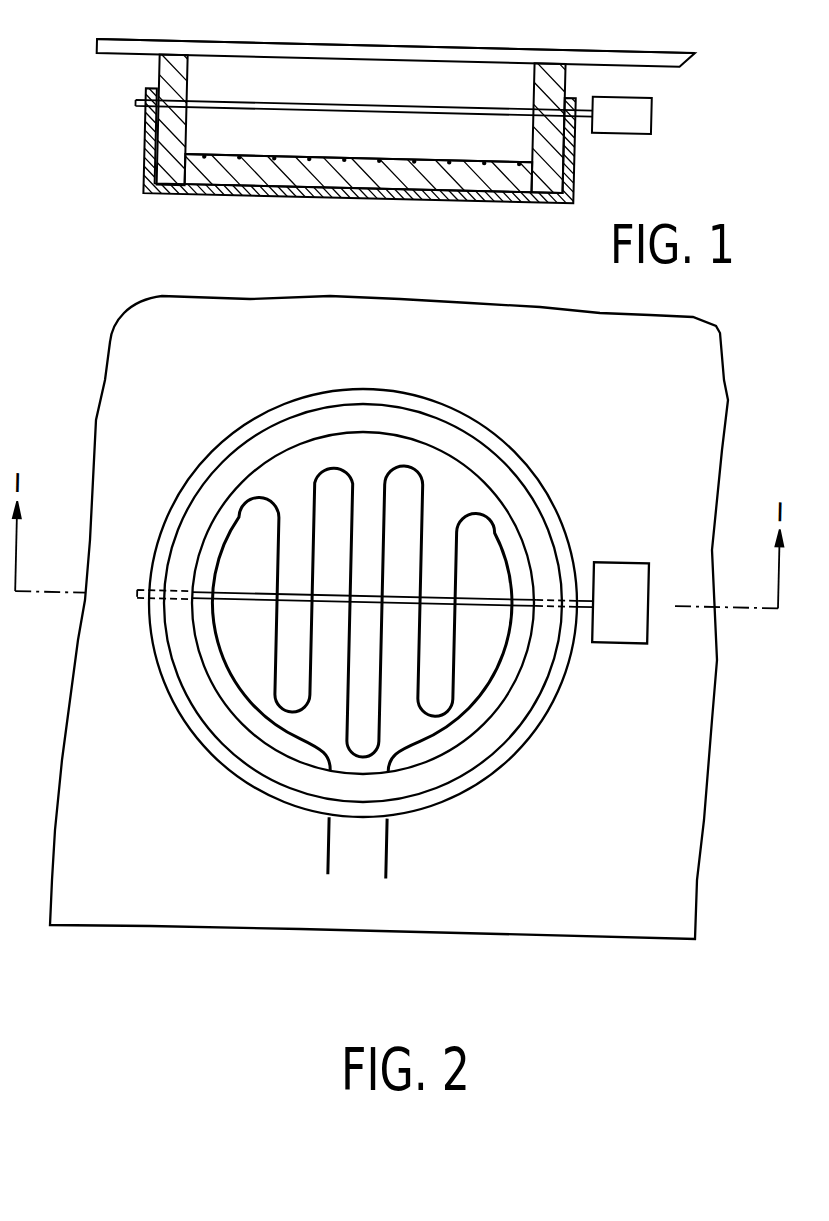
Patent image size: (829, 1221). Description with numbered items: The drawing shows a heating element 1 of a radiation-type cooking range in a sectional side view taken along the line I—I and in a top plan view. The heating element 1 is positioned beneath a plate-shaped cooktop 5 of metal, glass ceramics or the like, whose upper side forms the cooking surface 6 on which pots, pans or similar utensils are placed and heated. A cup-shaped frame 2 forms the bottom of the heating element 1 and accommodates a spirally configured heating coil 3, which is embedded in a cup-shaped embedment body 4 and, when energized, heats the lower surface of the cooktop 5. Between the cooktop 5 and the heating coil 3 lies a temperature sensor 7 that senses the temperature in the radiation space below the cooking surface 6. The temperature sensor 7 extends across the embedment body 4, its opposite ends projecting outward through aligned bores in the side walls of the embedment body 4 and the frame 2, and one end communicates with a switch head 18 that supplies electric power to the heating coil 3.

In FIG. 1, the heating element 1 is at (389, 99).
In FIG. 1, the cup-shaped frame 2 is at (173, 185).
In FIG. 2, the cup-shaped frame 2 is at (267, 782).
In FIG. 1, the heating coil 3 is at (378, 165).
In FIG. 2, the heating coil 3 is at (310, 740).
In FIG. 1, the embedment body 4 is at (438, 177).
In FIG. 2, the embedment body 4 is at (430, 773).
In FIG. 1, the cooktop 5 is at (488, 60).
In FIG. 2, the cooktop 5 is at (163, 863).
In FIG. 1, the cooking surface 6 is at (297, 43).
In FIG. 1, the temperature sensor 7 is at (237, 108).
In FIG. 2, the temperature sensor 7 is at (250, 598).
In FIG. 1, the switch head 18 is at (630, 122).
In FIG. 2, the switch head 18 is at (623, 613).